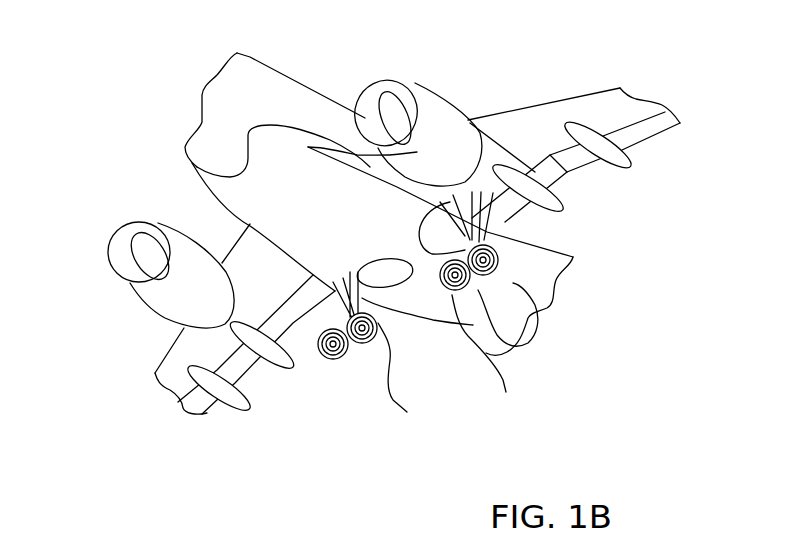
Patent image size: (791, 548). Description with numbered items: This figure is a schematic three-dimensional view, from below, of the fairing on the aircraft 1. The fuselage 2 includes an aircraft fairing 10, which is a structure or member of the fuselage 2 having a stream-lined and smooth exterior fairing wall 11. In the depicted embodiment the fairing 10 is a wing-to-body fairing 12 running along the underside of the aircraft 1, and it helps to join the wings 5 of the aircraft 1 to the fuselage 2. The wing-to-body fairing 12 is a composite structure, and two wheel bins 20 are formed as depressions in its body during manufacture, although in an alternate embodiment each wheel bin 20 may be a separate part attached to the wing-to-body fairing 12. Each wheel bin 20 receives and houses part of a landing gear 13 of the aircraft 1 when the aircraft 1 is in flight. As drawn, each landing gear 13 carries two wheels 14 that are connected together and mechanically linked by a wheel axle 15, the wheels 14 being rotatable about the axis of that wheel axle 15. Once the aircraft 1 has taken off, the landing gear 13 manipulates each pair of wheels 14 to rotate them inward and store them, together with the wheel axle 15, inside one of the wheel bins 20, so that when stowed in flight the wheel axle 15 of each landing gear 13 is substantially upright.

The aircraft 1 is at (374, 249).
The fuselage 2 is at (263, 97).
The wings 5 is at (617, 108).
The aircraft fairing 10 is at (203, 89).
The fairing wall 11 is at (299, 189).
The wing-to-body fairing 12 is at (283, 151).
The landing gear 13 is at (398, 337).
The wheels 14 is at (540, 313).
The wheel axle 15 is at (473, 325).
The wheel bins 20 is at (345, 253).